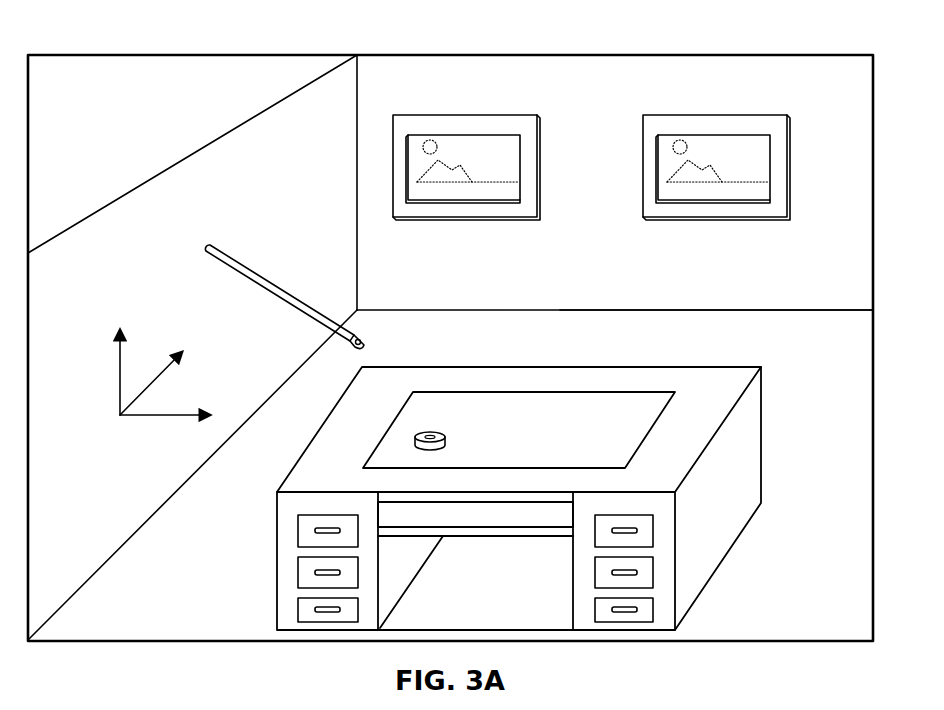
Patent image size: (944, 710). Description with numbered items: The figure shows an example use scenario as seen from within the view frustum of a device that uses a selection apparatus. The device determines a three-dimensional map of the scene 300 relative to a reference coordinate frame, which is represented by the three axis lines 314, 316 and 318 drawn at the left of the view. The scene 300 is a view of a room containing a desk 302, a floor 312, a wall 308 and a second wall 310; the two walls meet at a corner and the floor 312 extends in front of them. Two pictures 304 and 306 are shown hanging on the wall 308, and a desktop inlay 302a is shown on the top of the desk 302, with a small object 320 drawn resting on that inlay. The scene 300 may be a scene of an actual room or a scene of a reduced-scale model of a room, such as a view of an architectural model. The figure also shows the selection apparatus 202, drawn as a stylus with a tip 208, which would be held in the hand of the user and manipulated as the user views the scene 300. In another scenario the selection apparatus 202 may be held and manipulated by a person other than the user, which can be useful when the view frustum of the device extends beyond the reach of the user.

The scene 300 is at (163, 130).
The stylus 202 is at (235, 257).
The stylus tip 208 is at (353, 342).
The desk 302 is at (745, 422).
The desktop inlay 302a is at (612, 442).
The picture 304 is at (717, 115).
The picture 306 is at (467, 115).
The wall 308 is at (492, 292).
The wall 310 is at (227, 350).
The floor 312 is at (753, 325).
The axis line 314 is at (120, 365).
The axis line 316 is at (157, 380).
The axis line 318 is at (170, 422).
The puck / object 320 is at (440, 430).